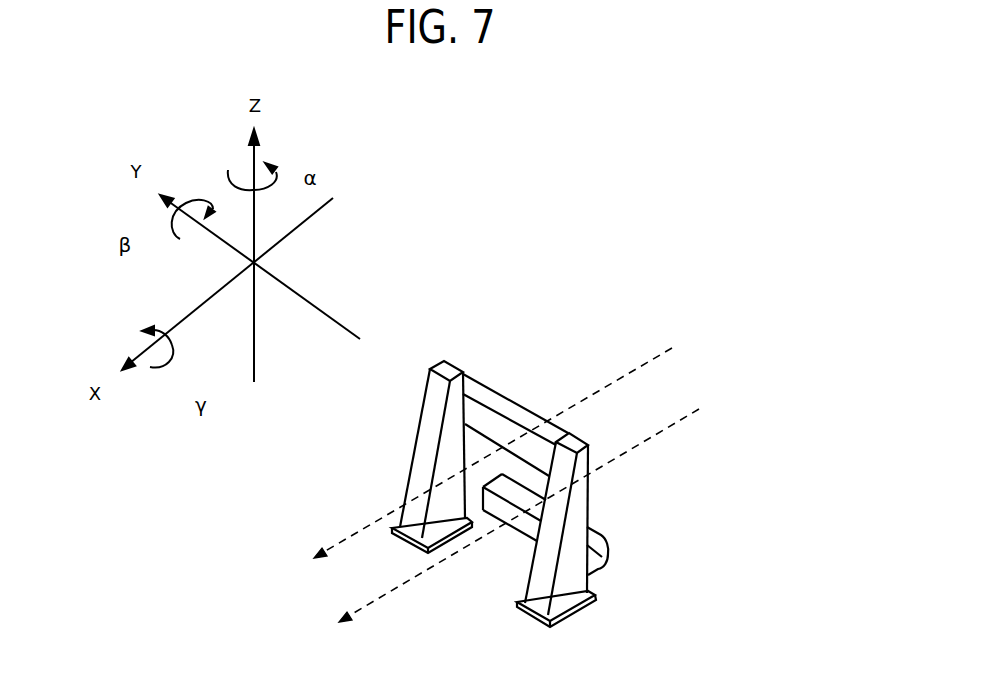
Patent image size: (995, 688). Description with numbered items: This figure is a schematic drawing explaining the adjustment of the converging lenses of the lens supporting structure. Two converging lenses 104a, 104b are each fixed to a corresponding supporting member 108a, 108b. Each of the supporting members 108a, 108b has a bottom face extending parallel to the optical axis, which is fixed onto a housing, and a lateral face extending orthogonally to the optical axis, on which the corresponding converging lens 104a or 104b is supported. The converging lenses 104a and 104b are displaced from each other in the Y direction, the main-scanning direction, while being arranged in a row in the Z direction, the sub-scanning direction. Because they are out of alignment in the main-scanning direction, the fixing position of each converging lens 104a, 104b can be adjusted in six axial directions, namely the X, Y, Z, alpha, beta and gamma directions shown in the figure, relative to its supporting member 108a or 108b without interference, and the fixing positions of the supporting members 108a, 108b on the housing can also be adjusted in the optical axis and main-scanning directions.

The converging lens 104a is at (493, 393).
The converging lens 104b is at (602, 557).
The supporting member 108a is at (422, 457).
The supporting member 108b is at (588, 574).